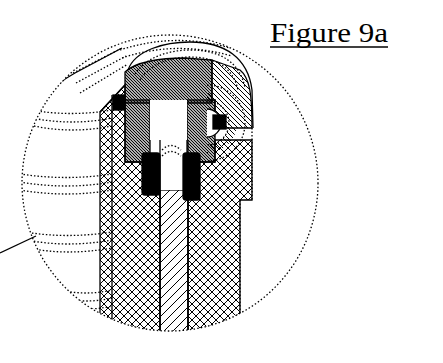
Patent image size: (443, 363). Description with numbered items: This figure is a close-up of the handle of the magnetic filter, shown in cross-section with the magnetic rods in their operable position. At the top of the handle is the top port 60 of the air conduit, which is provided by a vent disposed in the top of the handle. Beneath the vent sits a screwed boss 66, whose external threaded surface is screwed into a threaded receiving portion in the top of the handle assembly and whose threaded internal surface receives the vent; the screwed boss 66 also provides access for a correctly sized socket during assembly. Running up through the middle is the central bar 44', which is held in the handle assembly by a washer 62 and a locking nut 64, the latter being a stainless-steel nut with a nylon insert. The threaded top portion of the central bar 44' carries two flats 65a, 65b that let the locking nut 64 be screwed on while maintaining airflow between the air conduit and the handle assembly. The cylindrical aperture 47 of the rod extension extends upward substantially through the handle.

The top port 60 is at (195, 83).
The screwed boss 66 is at (208, 127).
The locking nut 64 is at (237, 178).
The washer 62 is at (200, 202).
The flat 65a is at (160, 231).
The flat 65b is at (180, 260).
The cylindrical aperture 47 is at (187, 290).
The central bar 44' is at (211, 190).